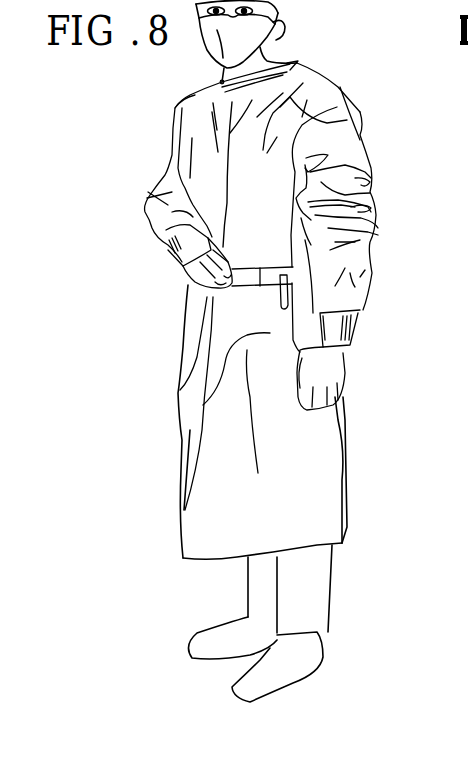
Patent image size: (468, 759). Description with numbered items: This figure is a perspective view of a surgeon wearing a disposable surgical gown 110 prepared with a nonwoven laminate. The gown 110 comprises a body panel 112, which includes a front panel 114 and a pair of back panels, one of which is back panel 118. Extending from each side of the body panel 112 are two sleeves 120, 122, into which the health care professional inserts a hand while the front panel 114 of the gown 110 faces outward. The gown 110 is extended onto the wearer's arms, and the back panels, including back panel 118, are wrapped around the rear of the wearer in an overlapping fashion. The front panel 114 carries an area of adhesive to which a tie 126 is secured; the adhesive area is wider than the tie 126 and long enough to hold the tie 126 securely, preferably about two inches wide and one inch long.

The surgical gown 110 is at (262, 363).
The body panel 112 is at (203, 405).
The front panel 114 is at (303, 83).
The back panel 118 is at (372, 198).
The sleeve 120 is at (170, 210).
The sleeve 122 is at (358, 275).
The tie 126 is at (267, 280).